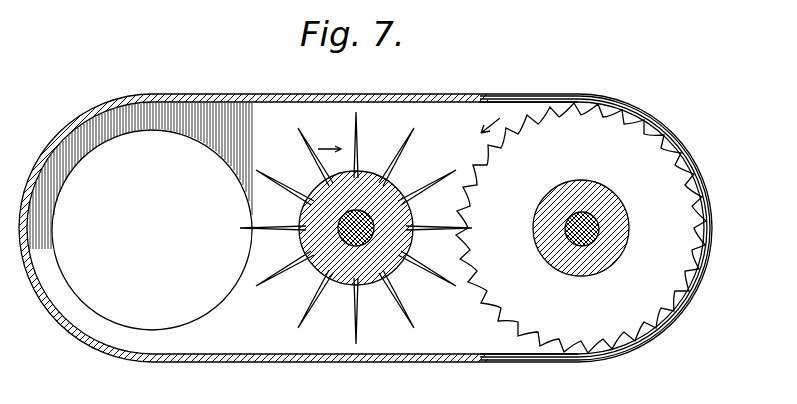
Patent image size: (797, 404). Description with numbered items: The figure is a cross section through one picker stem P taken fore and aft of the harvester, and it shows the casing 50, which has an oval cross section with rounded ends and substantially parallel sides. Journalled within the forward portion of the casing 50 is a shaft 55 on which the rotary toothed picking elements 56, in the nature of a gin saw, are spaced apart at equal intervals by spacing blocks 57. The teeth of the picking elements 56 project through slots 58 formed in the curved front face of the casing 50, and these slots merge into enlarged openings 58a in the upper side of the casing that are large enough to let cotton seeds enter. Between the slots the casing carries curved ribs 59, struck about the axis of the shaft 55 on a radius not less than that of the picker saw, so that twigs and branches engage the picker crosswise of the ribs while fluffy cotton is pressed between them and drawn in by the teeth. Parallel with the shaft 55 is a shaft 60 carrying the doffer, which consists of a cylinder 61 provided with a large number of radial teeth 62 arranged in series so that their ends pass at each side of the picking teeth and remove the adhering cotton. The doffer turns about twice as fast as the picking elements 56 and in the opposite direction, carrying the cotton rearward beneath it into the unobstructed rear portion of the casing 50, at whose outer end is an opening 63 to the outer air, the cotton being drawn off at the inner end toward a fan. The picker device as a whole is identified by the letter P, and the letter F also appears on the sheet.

The casing 50 is at (462, 356).
The shaft 55 is at (630, 222).
The toothed picking elements 56 is at (655, 291).
The spacing blocks 57 is at (590, 276).
The slots 58 is at (700, 233).
The enlarged openings 58a is at (500, 96).
The curved ribs 59 is at (712, 245).
The shaft 60 is at (308, 276).
The cylinder 61 is at (404, 248).
The radial teeth 62 is at (410, 137).
The opening 63 is at (152, 230).
The frame F is at (249, 381).